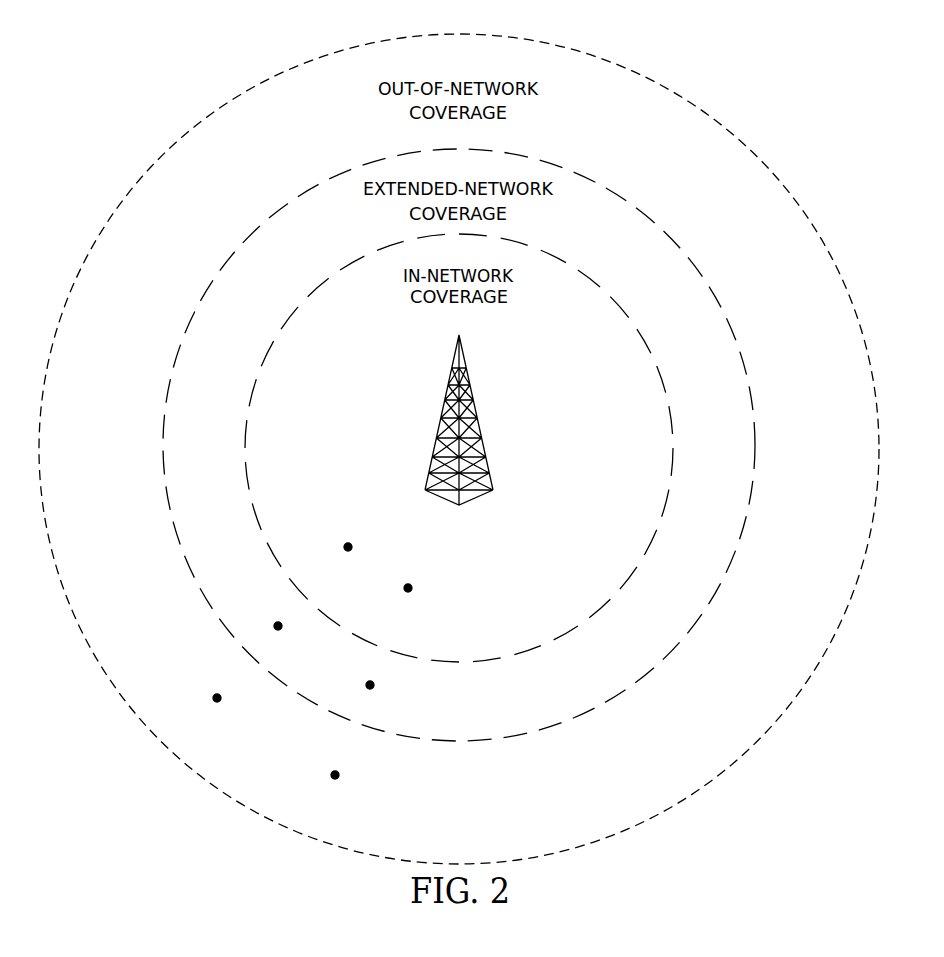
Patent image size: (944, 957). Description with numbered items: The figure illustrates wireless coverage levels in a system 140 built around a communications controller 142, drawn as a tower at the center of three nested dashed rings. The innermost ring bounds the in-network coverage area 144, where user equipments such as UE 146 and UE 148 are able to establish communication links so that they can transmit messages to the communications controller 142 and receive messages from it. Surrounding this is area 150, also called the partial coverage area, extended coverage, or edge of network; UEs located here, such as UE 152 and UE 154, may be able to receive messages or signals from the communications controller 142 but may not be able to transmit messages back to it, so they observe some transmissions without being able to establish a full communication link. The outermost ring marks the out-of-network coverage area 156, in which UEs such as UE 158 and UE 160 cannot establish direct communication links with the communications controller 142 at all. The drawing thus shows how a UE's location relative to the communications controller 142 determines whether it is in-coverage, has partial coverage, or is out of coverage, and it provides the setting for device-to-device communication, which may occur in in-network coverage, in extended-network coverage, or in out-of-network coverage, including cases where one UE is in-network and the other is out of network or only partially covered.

The system 140 is at (733, 65).
The communications controller 142 is at (480, 421).
The in-network coverage area 144 is at (388, 297).
The UE 146 is at (346, 541).
The UE 148 is at (413, 587).
The partial coverage area 150 is at (342, 172).
The UE 152 is at (283, 628).
The UE 154 is at (376, 686).
The out-of-network coverage area 156 is at (268, 73).
The UE 158 is at (214, 694).
The UE 160 is at (340, 776).